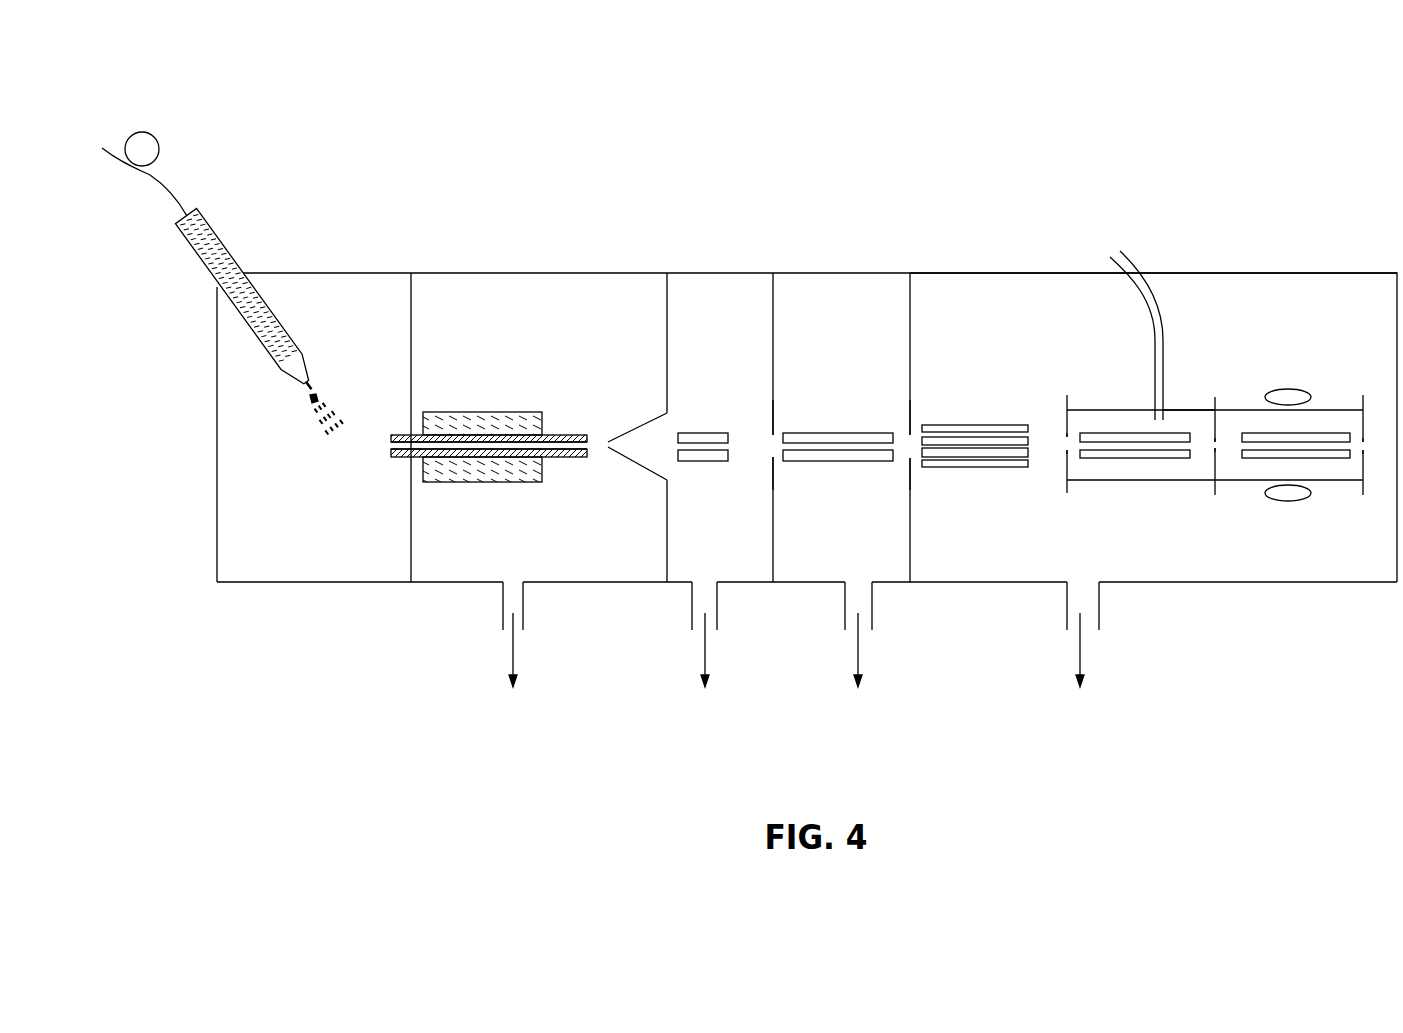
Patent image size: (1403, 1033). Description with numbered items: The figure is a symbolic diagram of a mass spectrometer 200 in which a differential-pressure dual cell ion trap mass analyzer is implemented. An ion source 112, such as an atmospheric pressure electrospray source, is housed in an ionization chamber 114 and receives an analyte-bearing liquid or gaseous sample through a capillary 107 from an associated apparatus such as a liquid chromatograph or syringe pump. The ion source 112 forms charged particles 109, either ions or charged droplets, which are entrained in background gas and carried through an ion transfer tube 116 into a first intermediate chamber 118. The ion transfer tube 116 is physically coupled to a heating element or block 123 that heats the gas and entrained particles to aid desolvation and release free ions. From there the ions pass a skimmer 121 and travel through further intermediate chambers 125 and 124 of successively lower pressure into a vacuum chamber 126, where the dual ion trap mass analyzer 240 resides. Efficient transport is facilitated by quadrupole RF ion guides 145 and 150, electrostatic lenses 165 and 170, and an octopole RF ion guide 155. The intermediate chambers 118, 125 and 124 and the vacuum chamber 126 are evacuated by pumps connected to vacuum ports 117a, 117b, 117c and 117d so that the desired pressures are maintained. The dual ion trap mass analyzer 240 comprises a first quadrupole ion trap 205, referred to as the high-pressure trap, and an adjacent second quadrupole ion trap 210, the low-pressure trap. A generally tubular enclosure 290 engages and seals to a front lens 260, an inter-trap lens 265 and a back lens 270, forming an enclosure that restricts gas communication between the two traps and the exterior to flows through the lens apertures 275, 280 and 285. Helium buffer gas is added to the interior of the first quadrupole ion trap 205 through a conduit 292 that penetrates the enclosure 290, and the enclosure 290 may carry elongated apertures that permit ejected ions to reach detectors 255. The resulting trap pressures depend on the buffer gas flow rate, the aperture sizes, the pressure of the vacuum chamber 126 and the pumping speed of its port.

The mass spectrometer 200 is at (787, 103).
The capillary 107 is at (162, 182).
The ion source 112 is at (222, 245).
The charged particles 109 is at (340, 402).
The ionization chamber 114 is at (320, 529).
The intermediate-vacuum chamber 118 is at (604, 311).
The ion transfer tube 116 is at (555, 435).
The heating element or block 123 is at (487, 410).
The skimmer 121 is at (633, 467).
The intermediate chamber 125 is at (753, 552).
The electrostatic lens 165 is at (772, 413).
The quadrupole RF ion guide 145 is at (708, 462).
The intermediate chamber 124 is at (854, 313).
The electrostatic lens 170 is at (908, 413).
The quadrupole RF ion guide 150 is at (847, 462).
The vacuum chamber 126 is at (978, 311).
The octopole RF ion guide 155 is at (973, 423).
The dual ion trap mass analyzer 240 is at (1108, 372).
The front lens 260 is at (1065, 433).
The lens aperture 275 is at (1060, 447).
The first quadrupole ion trap 205 is at (1137, 459).
The conduit 292 is at (1128, 263).
The tubular enclosure 290 is at (1182, 408).
The detectors 255 is at (1282, 388).
The lens aperture 285 is at (1370, 442).
The second quadrupole ion trap 210 is at (1345, 432).
The inter-trap lens 265 is at (1212, 453).
The lens aperture 280 is at (1223, 447).
The back lens 270 is at (1363, 453).
The vacuum port 117a is at (500, 612).
The vacuum port 117b is at (688, 612).
The vacuum port 117c is at (873, 610).
The vacuum port 117d is at (1100, 602).